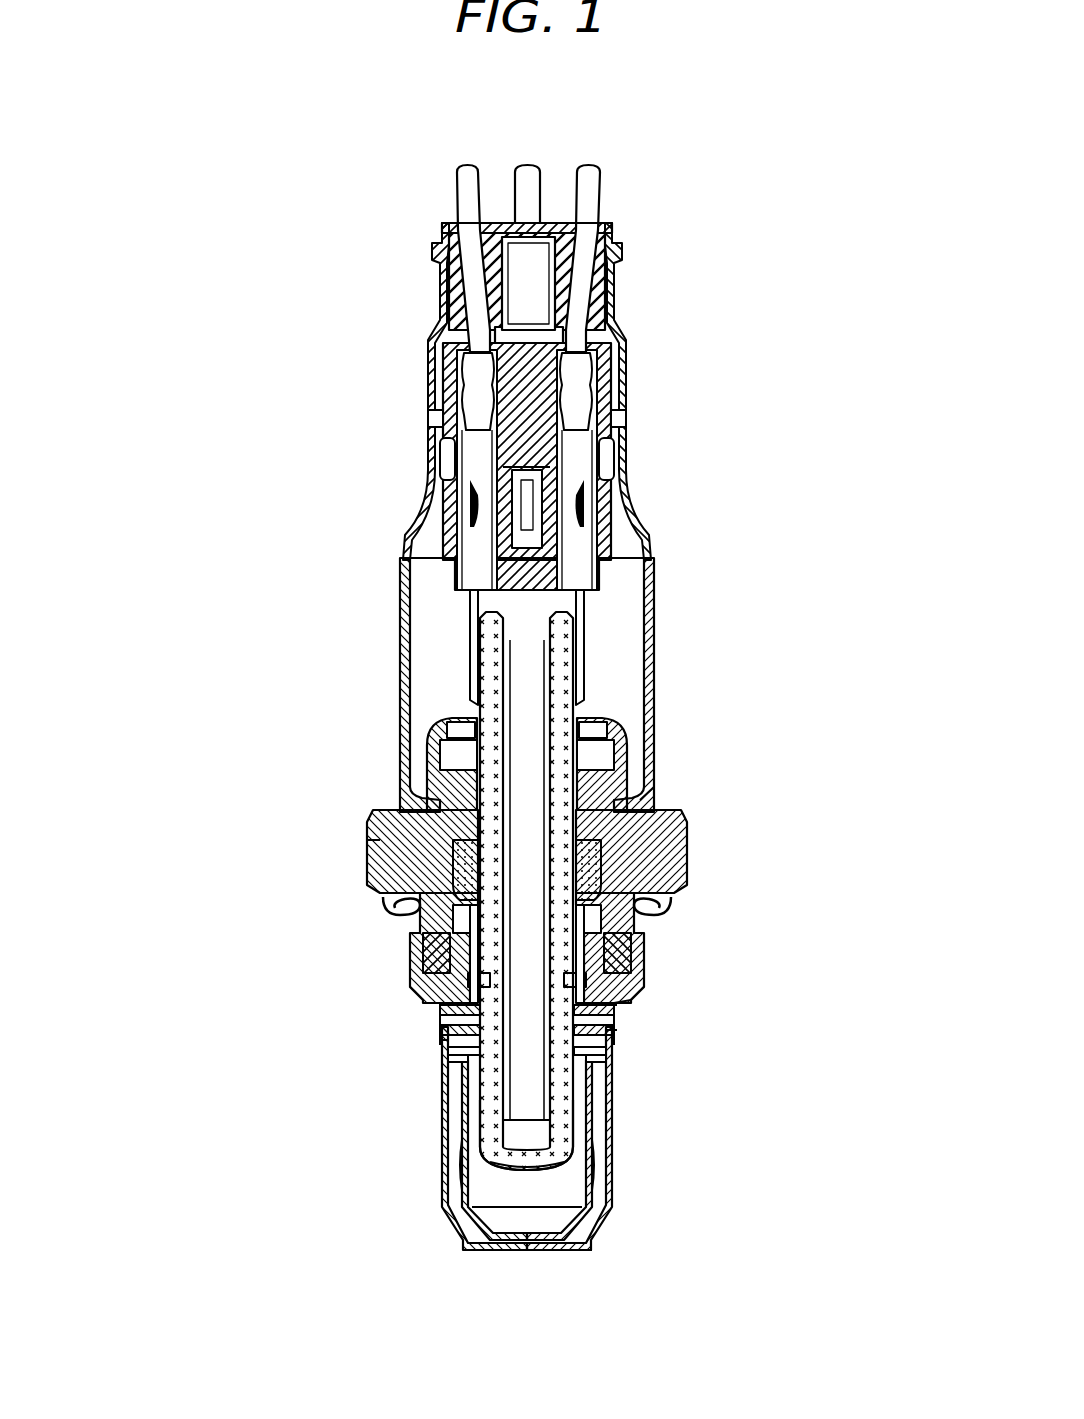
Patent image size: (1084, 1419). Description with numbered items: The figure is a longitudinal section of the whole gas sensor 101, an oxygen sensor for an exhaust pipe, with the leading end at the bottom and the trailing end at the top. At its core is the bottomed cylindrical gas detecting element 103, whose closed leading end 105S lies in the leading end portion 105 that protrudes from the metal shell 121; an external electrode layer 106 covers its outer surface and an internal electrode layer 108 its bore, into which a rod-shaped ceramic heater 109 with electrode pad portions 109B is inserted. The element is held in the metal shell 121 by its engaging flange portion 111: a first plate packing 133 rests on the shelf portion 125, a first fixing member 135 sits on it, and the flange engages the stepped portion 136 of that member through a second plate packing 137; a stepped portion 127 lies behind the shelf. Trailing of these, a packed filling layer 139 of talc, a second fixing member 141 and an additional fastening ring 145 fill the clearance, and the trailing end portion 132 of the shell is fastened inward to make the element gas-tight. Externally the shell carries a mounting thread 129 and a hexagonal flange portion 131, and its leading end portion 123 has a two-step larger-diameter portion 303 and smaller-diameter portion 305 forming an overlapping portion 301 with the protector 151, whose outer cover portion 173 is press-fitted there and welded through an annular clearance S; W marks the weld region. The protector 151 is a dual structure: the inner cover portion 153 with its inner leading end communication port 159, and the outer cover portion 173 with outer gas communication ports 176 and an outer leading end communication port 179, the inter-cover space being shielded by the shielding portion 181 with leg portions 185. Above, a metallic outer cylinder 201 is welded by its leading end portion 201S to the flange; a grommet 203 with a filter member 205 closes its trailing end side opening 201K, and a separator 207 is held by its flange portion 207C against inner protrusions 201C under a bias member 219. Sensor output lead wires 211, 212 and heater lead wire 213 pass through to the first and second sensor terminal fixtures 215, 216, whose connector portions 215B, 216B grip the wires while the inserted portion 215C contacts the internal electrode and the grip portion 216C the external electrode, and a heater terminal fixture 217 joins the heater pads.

The gas sensor 101 is at (686, 206).
The gas detecting element 103 is at (577, 692).
The leading end portion of the gas detecting element 105 is at (572, 1120).
The leading end 105S is at (520, 1165).
The external electrode layer 106 is at (470, 1135).
The internal electrode layer 108 is at (462, 848).
The ceramic heater 109 is at (690, 873).
The electrode pad portions 109B is at (520, 542).
The engaging flange portion 111 is at (645, 940).
The metal shell 121 is at (352, 830).
The leading end portion of the metal shell 123 is at (327, 985).
The shelf portion 125 is at (420, 990).
The stepped portion 127 is at (690, 830).
The mounting thread 129 is at (632, 985).
The hexagonal flange portion 131 is at (372, 850).
The trailing end portion of the metal shell 132 is at (447, 720).
The first plate packing 133 is at (466, 975).
The first fixing member 135 is at (645, 970).
The stepped portion of the first fixing member 136 is at (452, 944).
The second plate packing 137 is at (455, 905).
The packed filling layer 139 is at (678, 895).
The second fixing member 141 is at (640, 758).
The additional fastening ring 145 is at (445, 748).
The protector 151 is at (445, 1090).
The inner cover portion 153 is at (598, 1240).
The inner leading end communication port 159 is at (520, 1250).
The outer cover portion 173 is at (598, 1230).
The outer gas communication ports 176 is at (603, 1172).
The outer leading end communication port 179 is at (533, 1250).
The shielding portion 181 is at (615, 1075).
The leg portions 185 is at (620, 1050).
The metallic outer cylinder 201 is at (655, 720).
The inner protrusions 201C is at (625, 400).
The trailing end side opening 201K is at (622, 262).
The leading end portion of the metallic outer cylinder 201S is at (653, 793).
The grommet 203 is at (625, 318).
The filter member 205 is at (556, 292).
The separator 207 is at (593, 515).
The flange portion of the separator 207C is at (618, 437).
The sensor output lead wire 211 is at (590, 168).
The sensor output lead wire 212 is at (462, 168).
The heater lead wire 213 is at (525, 165).
The first sensor terminal fixture 215 is at (560, 577).
The connector portion of the first terminal fixture 215B is at (580, 373).
The inserted portion 215C is at (540, 675).
The second sensor terminal fixture 216 is at (478, 467).
The connector portion of the second terminal fixture 216B is at (478, 371).
The grip portion 216C is at (477, 655).
The heater terminal fixture 217 is at (531, 523).
The bias member 219 is at (613, 460).
The overlapping portion 301 is at (428, 1049).
The larger-diameter portion 303 is at (445, 1030).
The smaller-diameter portion 305 is at (445, 1010).
The annular clearance S is at (618, 1008).
The washer W is at (615, 1037).